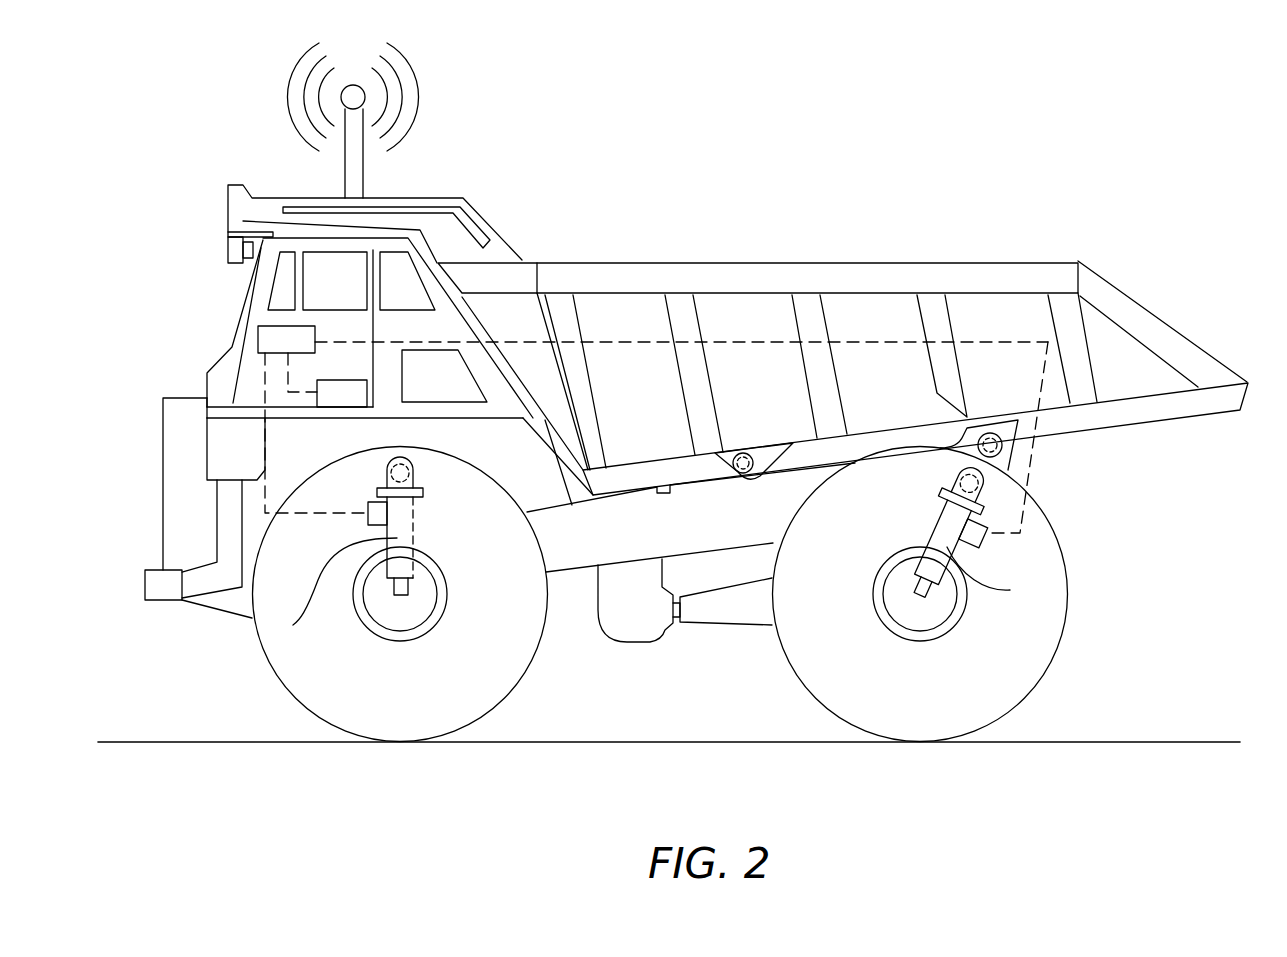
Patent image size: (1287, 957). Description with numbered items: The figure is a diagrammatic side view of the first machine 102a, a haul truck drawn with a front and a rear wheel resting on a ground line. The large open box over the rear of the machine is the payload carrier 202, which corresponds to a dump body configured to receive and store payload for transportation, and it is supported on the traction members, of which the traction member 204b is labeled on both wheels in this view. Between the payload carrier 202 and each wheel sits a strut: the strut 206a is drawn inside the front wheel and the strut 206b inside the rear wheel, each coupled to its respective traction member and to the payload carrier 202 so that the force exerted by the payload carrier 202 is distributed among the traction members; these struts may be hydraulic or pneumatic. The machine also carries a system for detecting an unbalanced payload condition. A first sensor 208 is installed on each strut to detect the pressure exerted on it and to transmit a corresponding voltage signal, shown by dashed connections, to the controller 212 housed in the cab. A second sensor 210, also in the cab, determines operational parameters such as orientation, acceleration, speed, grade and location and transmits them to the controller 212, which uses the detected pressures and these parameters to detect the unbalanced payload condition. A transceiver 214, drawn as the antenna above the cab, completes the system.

The first machine 102a is at (900, 103).
The payload carrier 202 is at (1023, 270).
The traction member 204b is at (500, 647).
The strut 206a is at (293, 625).
The strut 206b is at (1010, 590).
The first sensor 208 is at (368, 505).
The second sensor 210 is at (362, 405).
The controller 212 is at (306, 351).
The transceiver 214 is at (357, 172).